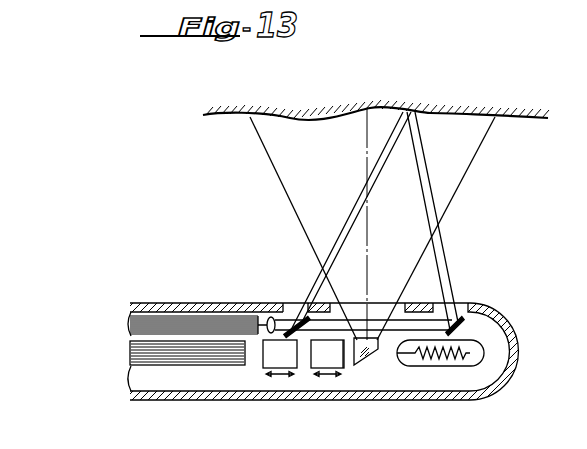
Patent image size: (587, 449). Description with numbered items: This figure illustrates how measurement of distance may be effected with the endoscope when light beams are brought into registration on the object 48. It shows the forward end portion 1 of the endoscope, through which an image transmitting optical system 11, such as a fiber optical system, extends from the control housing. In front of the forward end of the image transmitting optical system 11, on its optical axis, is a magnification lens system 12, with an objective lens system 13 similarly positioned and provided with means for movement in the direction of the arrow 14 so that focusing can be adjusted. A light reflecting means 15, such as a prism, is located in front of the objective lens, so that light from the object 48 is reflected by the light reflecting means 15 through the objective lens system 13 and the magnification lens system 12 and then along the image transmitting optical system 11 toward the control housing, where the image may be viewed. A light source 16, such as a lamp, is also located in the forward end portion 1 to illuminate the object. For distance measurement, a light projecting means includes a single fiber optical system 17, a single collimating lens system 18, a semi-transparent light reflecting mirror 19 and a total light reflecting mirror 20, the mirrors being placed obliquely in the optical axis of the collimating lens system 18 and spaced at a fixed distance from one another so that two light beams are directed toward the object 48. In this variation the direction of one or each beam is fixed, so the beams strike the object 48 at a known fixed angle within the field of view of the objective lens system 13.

The forward end portion 1 is at (516, 353).
The image transmitting optical system 11 is at (171, 367).
The magnification lens system 12 is at (263, 368).
The objective lens system 13 is at (345, 368).
The arrow 14 is at (318, 369).
The light reflecting means 15 is at (357, 366).
The light source 16 is at (458, 368).
The fiber optical system 17 is at (176, 326).
The collimating lens system 18 is at (266, 319).
The semi-transparent light reflecting mirror 19 is at (293, 323).
The total light reflecting mirror 20 is at (472, 322).
The object 48 is at (394, 85).